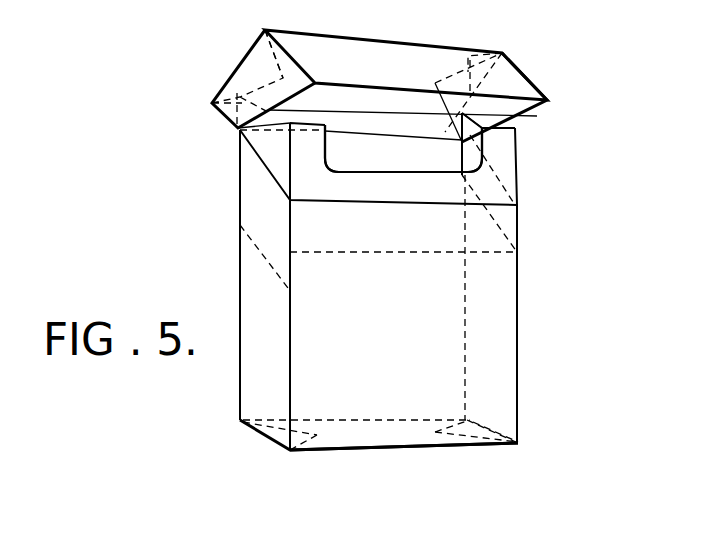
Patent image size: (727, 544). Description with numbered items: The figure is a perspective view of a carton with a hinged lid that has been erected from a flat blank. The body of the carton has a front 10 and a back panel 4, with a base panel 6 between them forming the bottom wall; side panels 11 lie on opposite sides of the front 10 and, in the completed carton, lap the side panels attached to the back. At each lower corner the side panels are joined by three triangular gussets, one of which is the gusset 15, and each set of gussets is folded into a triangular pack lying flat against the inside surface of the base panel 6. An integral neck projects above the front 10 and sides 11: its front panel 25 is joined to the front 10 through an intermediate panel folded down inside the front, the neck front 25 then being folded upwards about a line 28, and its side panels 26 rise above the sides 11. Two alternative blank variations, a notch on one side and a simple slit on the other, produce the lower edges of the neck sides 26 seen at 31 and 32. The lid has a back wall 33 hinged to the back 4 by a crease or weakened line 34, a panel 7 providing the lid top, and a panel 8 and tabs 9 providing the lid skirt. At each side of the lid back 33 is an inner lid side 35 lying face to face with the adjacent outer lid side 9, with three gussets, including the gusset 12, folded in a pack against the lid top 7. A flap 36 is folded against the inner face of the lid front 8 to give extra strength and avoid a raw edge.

The back panel 4 is at (400, 163).
The base panel 6 is at (378, 452).
The lid top panel 7 is at (403, 103).
The lid front panel 8 is at (378, 43).
The outer lid side tab 9 is at (248, 72).
The front panel 10 is at (402, 343).
The side panel 11 is at (255, 270).
The lid gusset 12 is at (258, 52).
The triangular gusset 15 is at (268, 437).
The neck front panel 25 is at (411, 198).
The neck side panel 26 is at (267, 142).
The fold line 28 is at (384, 257).
The lower edge of neck side 31 is at (265, 268).
The lower edge of neck side 32 is at (493, 218).
The lid back wall 33 is at (373, 122).
The crease line 34 is at (457, 140).
The inner lid side 35 is at (498, 96).
The flap 36 is at (347, 98).